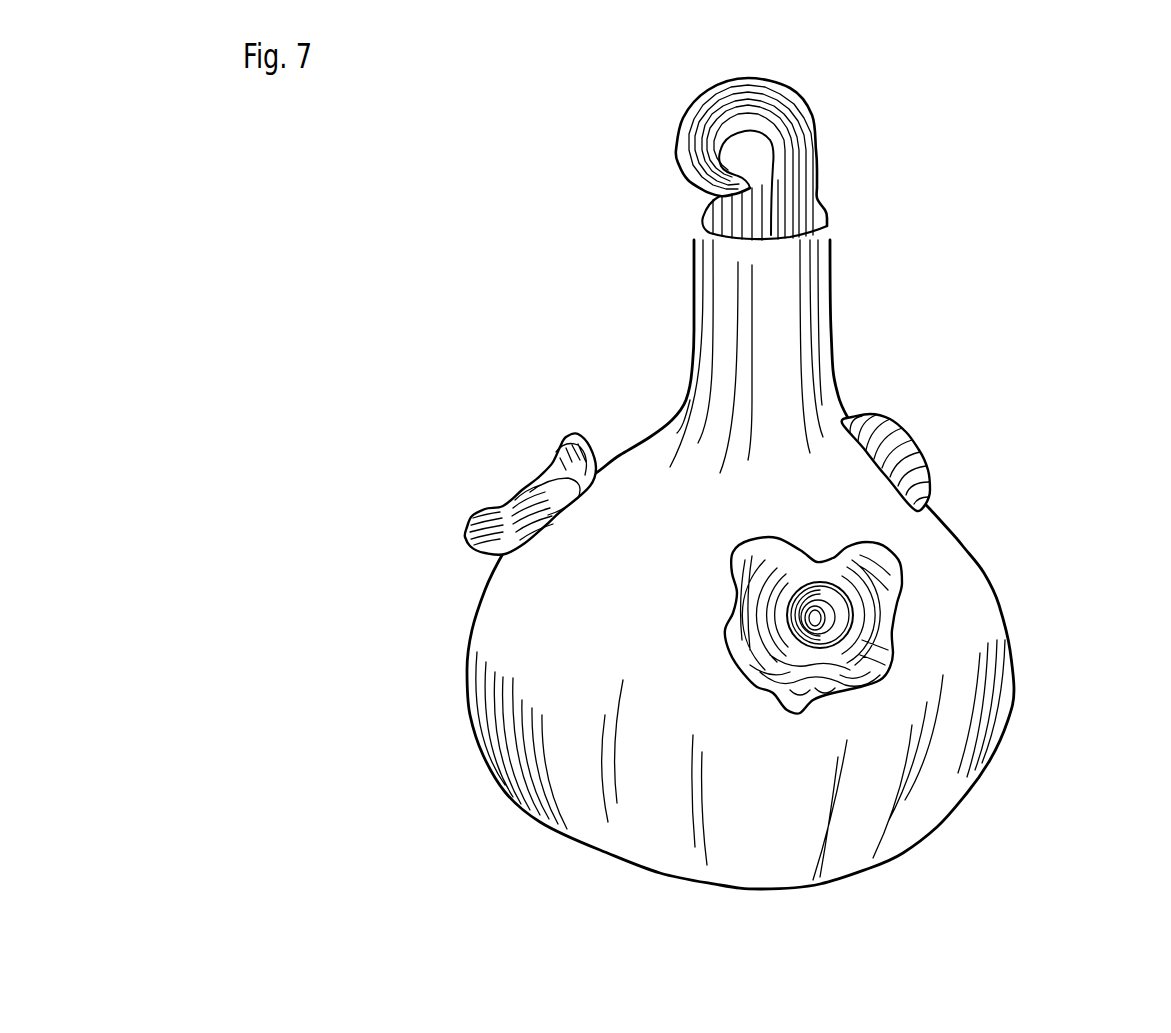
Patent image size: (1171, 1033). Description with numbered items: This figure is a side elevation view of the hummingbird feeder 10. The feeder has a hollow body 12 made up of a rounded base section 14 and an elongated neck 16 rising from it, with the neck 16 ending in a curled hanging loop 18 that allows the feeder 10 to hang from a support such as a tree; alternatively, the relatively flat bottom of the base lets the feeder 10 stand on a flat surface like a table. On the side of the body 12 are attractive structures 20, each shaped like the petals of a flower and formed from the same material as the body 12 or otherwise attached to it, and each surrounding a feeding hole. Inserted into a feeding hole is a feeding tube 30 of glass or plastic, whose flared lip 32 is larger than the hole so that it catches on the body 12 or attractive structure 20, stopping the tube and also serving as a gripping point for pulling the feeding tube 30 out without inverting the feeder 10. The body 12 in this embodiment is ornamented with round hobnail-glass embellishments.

The hummingbird feeder 10 is at (530, 280).
The hollow body 12 is at (767, 499).
The rounded base section 14 is at (465, 676).
The elongated neck 16 is at (770, 336).
The hanging loop 18 is at (800, 108).
The attractive structure 20 is at (928, 461).
The feeding tube 30 is at (838, 622).
The lip 32 is at (848, 593).